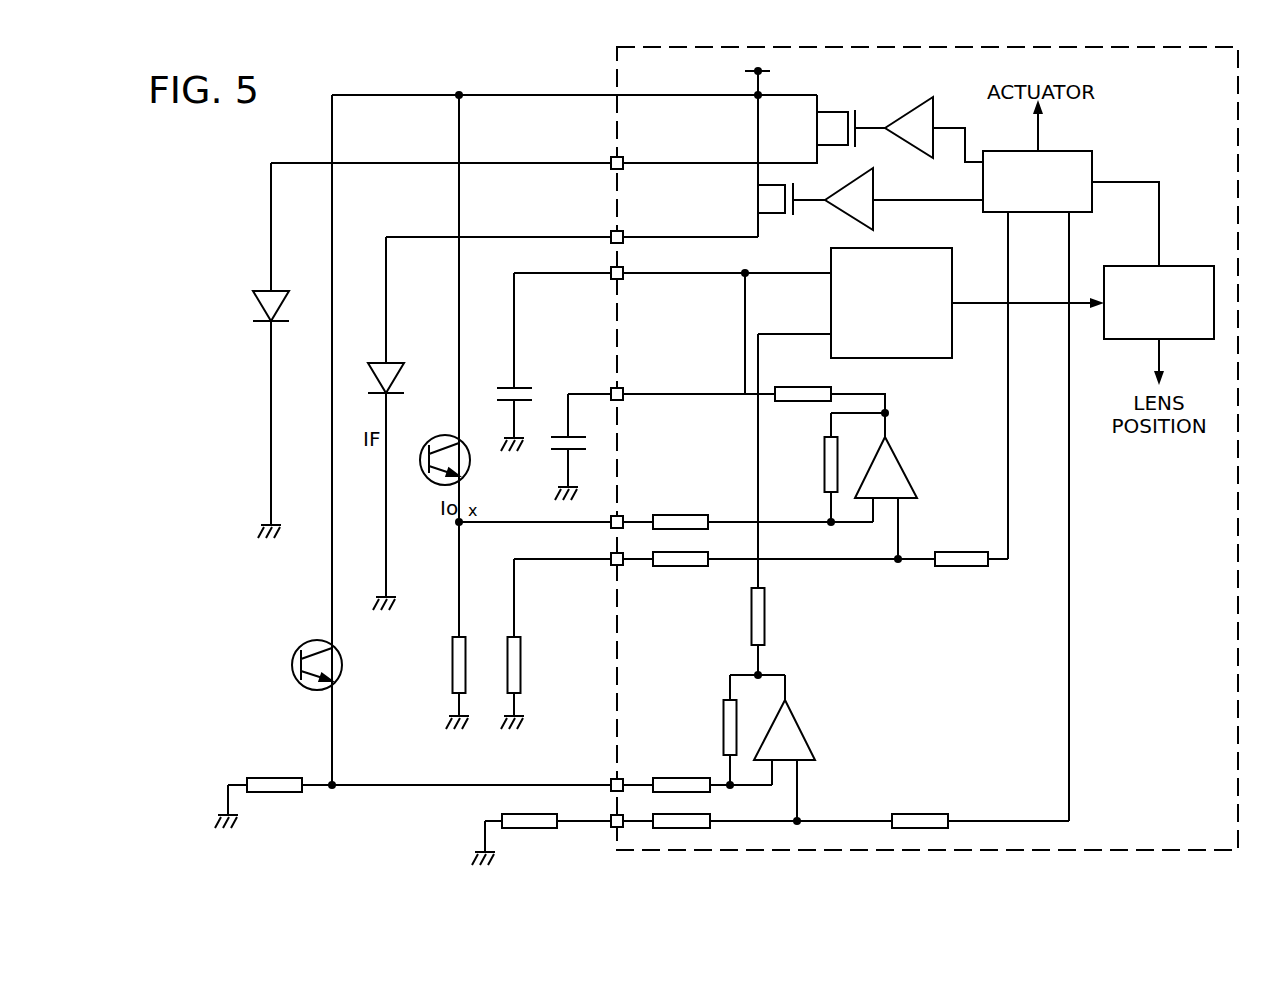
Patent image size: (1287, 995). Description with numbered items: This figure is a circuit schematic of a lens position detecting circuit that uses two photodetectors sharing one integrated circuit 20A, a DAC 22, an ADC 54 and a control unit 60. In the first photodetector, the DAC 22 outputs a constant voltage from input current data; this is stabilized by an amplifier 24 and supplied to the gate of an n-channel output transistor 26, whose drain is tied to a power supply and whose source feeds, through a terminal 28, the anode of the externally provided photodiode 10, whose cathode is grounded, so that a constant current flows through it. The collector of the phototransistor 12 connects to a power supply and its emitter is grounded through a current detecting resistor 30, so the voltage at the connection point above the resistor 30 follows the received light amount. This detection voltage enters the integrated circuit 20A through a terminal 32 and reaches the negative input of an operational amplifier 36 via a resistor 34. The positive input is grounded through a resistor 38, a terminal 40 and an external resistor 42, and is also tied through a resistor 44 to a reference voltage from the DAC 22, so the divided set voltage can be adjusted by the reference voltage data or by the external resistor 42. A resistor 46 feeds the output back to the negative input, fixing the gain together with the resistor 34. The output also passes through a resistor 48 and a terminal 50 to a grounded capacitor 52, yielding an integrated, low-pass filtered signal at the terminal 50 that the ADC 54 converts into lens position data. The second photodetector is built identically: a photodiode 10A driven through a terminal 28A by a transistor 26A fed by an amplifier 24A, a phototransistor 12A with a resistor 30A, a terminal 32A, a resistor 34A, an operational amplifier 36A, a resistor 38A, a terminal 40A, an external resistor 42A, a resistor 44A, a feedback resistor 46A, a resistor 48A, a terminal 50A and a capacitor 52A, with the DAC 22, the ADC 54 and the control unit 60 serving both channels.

The photodiode 10 is at (375, 379).
The photodiode 10A is at (254, 306).
The phototransistor 12 is at (441, 447).
The phototransistor 12A is at (305, 656).
The integrated circuit 20A is at (951, 447).
The DAC 22 is at (1040, 168).
The amplifier 24 is at (845, 201).
The amplifier 24A is at (907, 120).
The output transistor 26 is at (780, 199).
The transistor 26A is at (832, 128).
The terminal 28 is at (605, 226).
The input 28A is at (600, 151).
The current detecting resistor 30 is at (447, 665).
The resistor 30A is at (274, 774).
The terminal 32 is at (605, 511).
The input 32A is at (600, 773).
The resistor 34 is at (680, 510).
The resistor 34A is at (681, 773).
The operational amplifier 36 is at (892, 467).
The operational amplifier 36A is at (800, 730).
The resistor 38 is at (680, 572).
The resistor 38A is at (681, 834).
The terminal 40 is at (605, 572).
The input 40A is at (600, 810).
The external resistor 42 is at (501, 665).
The resistor 42A is at (529, 833).
The resistor 44 is at (961, 571).
The resistor 44A is at (920, 810).
The resistor 46 is at (818, 464).
The resistor 46A is at (711, 727).
The resistor 48 is at (803, 383).
The resistor 48A is at (782, 616).
The terminal 50 is at (605, 286).
The input 50A is at (600, 383).
The capacitor 52 is at (521, 383).
The capacitor 52A is at (581, 430).
The ADC 54 is at (894, 291).
The control unit 60 is at (1158, 290).